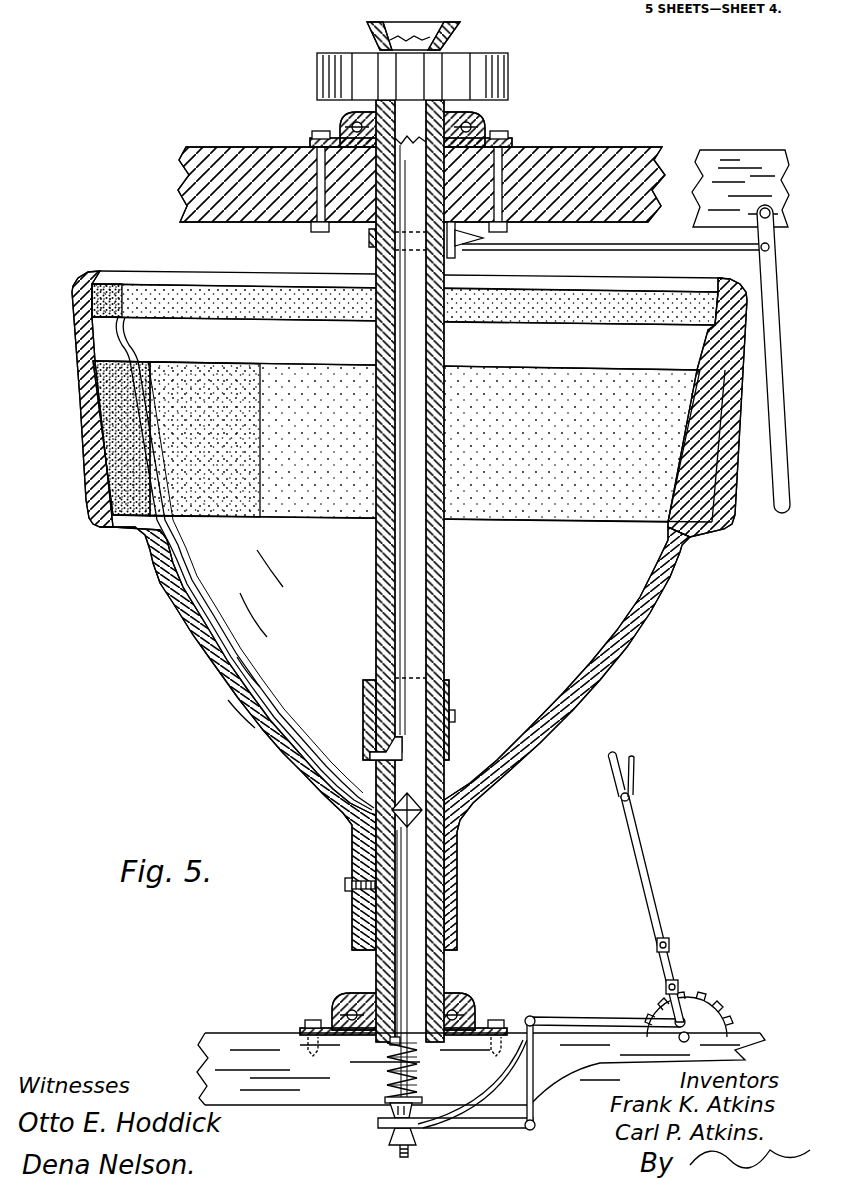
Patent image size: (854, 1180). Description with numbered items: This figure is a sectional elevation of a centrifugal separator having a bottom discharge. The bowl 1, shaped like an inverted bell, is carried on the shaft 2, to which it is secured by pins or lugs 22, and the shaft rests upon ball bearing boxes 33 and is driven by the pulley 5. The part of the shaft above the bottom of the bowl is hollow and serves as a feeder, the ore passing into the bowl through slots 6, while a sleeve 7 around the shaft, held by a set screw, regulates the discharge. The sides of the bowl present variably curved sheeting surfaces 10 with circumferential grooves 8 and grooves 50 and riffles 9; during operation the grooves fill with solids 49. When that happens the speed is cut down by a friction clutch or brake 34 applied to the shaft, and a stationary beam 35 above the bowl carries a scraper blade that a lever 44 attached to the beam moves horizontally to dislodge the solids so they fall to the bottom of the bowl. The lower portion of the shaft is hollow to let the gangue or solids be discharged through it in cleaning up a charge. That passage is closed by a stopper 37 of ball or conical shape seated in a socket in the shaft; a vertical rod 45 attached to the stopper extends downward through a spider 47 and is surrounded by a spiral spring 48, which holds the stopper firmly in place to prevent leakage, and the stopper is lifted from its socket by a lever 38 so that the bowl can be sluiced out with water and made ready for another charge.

The bowl 1 is at (229, 722).
The shaft 2 is at (376, 576).
The pulley 5 is at (510, 75).
The slots 6 is at (364, 783).
The sleeve 7 is at (450, 745).
The grooves 8 is at (84, 433).
The riffles 9 is at (88, 276).
The variably curved sheeting surfaces 10 is at (108, 337).
The pins or lugs 22 is at (345, 885).
The ball bearing boxes 33 is at (487, 121).
The friction clutch or brake 34 is at (460, 255).
The stationary beam 35 is at (606, 158).
The stopper 37 is at (392, 806).
The lever 38 is at (470, 1130).
The lever 44 is at (773, 336).
The vertical rod 45 is at (420, 904).
The spider 47 is at (392, 1041).
The spiral spring 48 is at (388, 1087).
The solids 49 is at (86, 494).
The grooves 50 is at (84, 298).